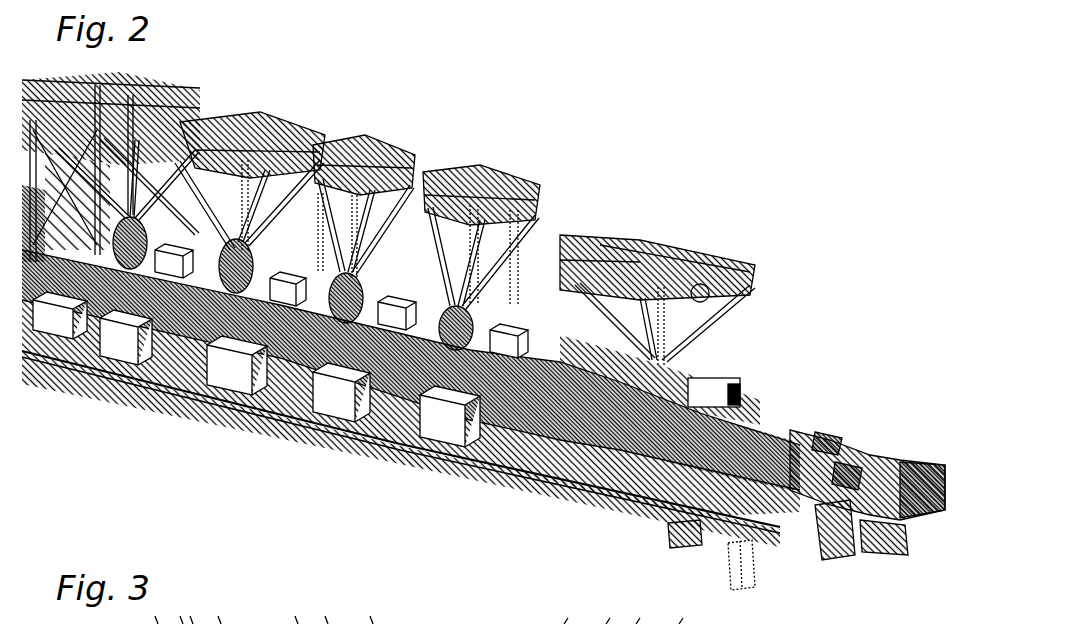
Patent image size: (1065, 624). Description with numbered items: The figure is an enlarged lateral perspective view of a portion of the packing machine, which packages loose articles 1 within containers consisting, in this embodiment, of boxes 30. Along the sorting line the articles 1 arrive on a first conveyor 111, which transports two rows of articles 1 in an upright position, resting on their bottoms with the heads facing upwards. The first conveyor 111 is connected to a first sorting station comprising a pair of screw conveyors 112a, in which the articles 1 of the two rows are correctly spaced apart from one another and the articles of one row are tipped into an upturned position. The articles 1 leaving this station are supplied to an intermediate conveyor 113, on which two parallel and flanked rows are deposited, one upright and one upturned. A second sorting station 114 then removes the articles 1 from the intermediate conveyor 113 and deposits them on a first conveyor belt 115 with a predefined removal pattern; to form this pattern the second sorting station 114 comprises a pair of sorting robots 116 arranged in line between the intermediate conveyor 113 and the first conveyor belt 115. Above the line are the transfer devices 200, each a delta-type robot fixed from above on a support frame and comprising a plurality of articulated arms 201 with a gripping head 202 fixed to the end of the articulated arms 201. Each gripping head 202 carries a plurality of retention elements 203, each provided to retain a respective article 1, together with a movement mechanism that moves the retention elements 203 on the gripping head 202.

The article 1 is at (936, 500).
The box 30 is at (186, 224).
The first conveyor 111 is at (922, 536).
The screw conveyor 112a is at (849, 471).
The intermediate conveyor 113 is at (677, 465).
The second sorting station 114 is at (701, 256).
The first conveyor belt 115 is at (790, 443).
The sorting robot 116 is at (627, 440).
The transfer device 200 is at (370, 160).
The articulated arm 201 is at (228, 190).
The gripping head 202 is at (220, 280).
The retention element 203 is at (235, 300).